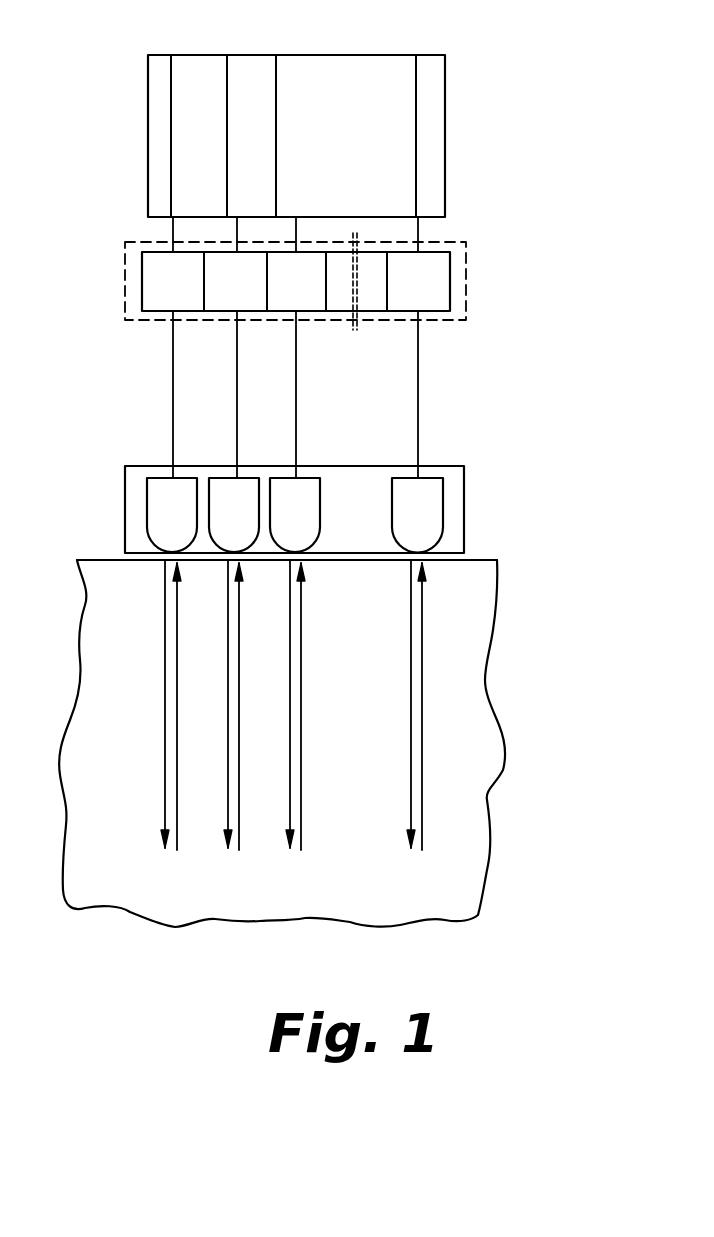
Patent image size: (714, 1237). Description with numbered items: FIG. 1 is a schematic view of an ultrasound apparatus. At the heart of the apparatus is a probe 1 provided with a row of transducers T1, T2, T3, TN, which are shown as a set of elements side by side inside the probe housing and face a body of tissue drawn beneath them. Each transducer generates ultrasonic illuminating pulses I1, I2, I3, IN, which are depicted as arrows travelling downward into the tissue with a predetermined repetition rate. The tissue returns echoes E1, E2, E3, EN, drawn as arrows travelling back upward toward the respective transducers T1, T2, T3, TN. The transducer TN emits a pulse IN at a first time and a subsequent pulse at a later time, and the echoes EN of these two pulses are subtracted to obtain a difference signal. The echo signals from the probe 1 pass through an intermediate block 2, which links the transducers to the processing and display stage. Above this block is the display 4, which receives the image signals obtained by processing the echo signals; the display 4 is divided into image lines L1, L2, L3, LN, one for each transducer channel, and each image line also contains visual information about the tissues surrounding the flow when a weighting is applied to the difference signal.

The probe 1 is at (325, 466).
The switching/delay unit 2 is at (466, 278).
The display 4 is at (445, 67).
The image line L1 is at (171, 167).
The image line L2 is at (230, 85).
The image line L3 is at (276, 167).
The image line LN is at (416, 137).
The transducer T1 is at (155, 507).
The transducer T2 is at (223, 487).
The transducer T3 is at (298, 503).
The transducer TN is at (428, 502).
The illuminating pulse I1 is at (165, 640).
The illuminating pulse I2 is at (228, 767).
The illuminating pulse I3 is at (290, 702).
The illuminating pulse IN is at (411, 650).
The echo E1 is at (177, 673).
The echo E2 is at (239, 790).
The echo E3 is at (301, 755).
The echo EN is at (422, 732).